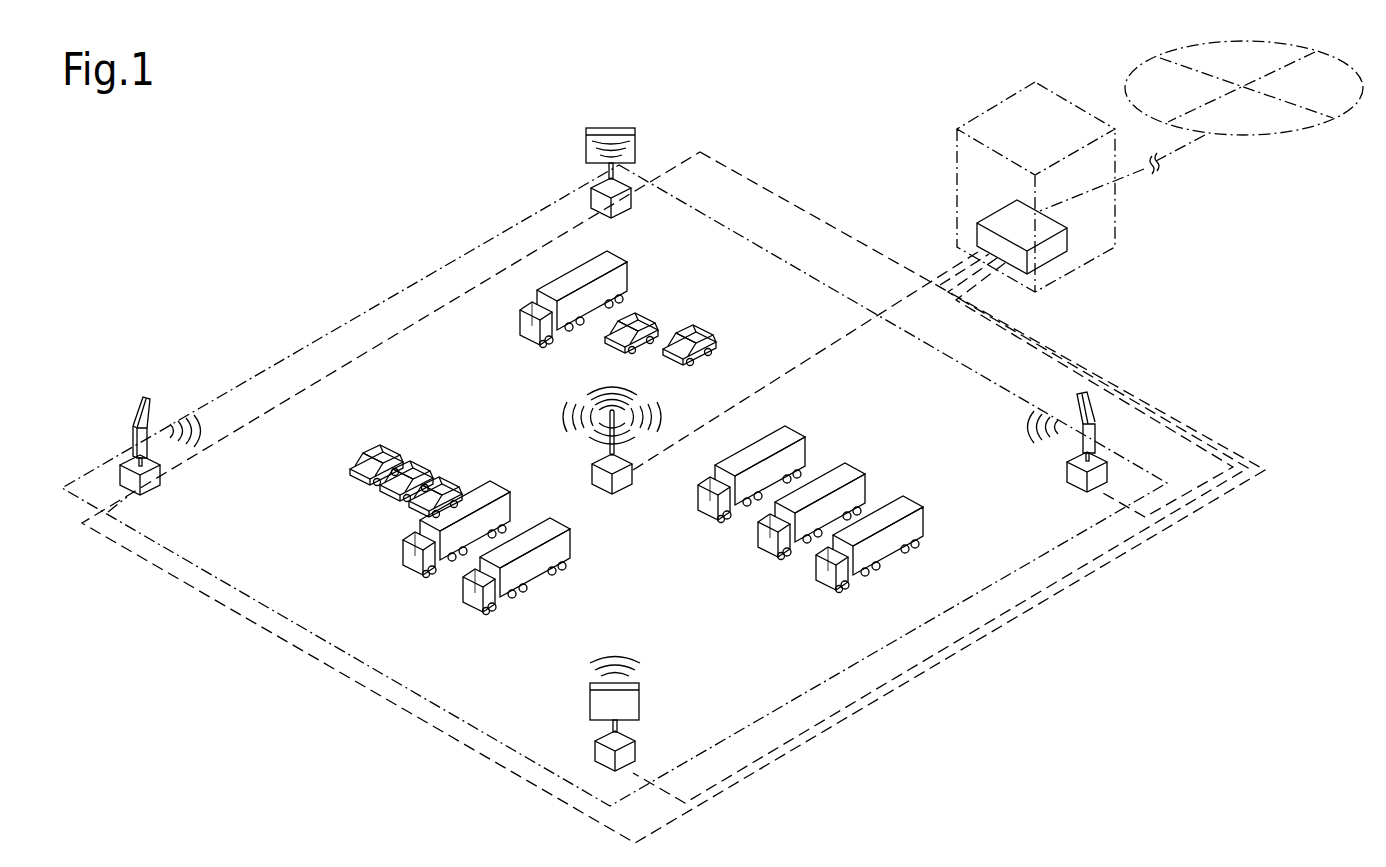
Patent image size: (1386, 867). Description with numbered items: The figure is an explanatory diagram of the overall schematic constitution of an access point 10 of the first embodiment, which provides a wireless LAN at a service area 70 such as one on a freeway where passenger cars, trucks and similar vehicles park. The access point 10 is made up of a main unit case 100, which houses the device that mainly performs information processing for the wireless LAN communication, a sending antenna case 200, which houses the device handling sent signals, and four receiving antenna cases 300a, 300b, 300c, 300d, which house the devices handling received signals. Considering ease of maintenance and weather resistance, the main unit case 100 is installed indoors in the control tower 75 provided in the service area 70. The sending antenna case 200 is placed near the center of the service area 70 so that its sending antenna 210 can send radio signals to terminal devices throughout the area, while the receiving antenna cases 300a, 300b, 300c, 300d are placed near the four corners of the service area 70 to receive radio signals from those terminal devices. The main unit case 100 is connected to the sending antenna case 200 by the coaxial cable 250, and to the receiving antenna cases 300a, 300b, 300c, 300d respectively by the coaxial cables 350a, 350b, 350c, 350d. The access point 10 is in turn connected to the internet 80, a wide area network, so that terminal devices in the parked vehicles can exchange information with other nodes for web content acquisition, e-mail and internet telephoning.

The access point 10 is at (1129, 655).
The service area 70 is at (377, 297).
The control tower 75 is at (1115, 213).
The internet 80 is at (1257, 137).
The main unit case 100 is at (1067, 239).
The sending antenna case 200 is at (623, 492).
The sending antenna 210 is at (608, 453).
The coaxial cable 250 is at (683, 440).
The receiving antenna case 300a is at (592, 197).
The receiving antenna case 300b is at (1067, 466).
The receiving antenna case 300c is at (595, 752).
The receiving antenna case 300d is at (160, 475).
The coaxial cable 350a is at (643, 182).
The coaxial cable 350b is at (1103, 493).
The coaxial cable 350c is at (640, 773).
The coaxial cable 350d is at (115, 502).